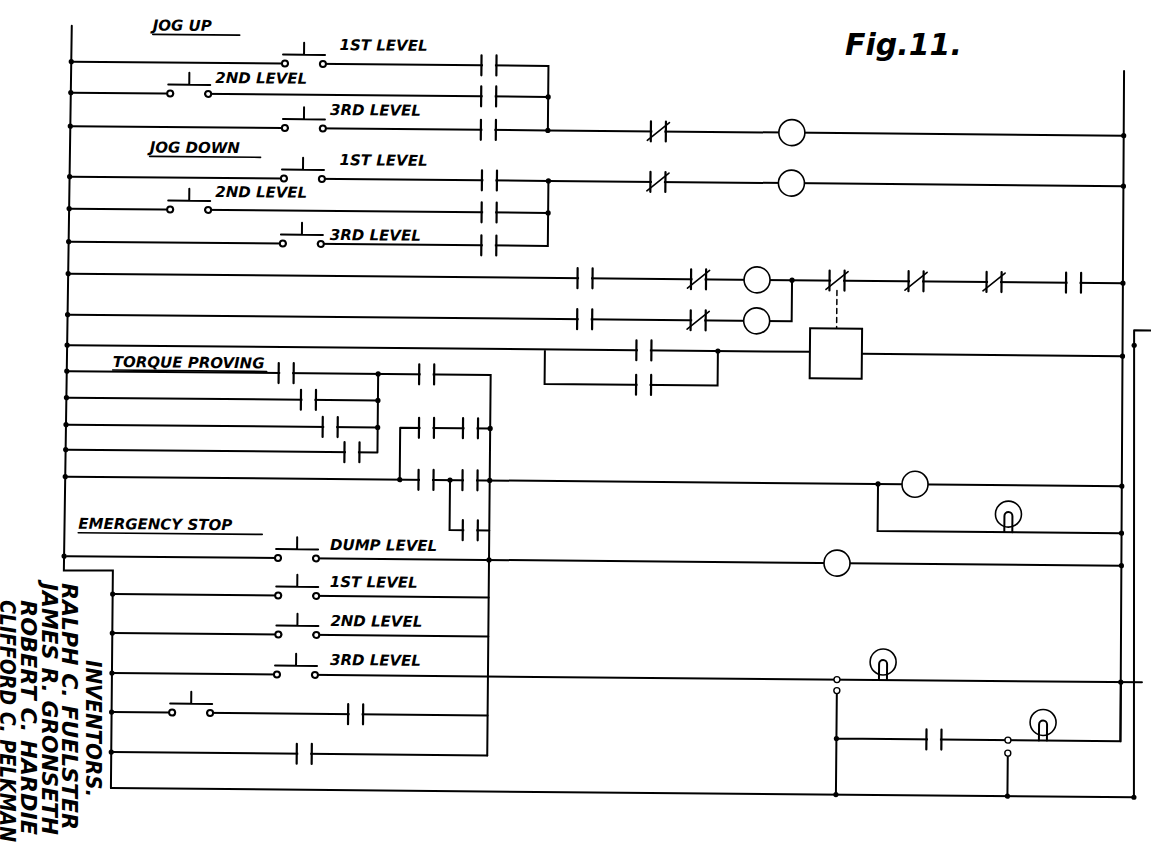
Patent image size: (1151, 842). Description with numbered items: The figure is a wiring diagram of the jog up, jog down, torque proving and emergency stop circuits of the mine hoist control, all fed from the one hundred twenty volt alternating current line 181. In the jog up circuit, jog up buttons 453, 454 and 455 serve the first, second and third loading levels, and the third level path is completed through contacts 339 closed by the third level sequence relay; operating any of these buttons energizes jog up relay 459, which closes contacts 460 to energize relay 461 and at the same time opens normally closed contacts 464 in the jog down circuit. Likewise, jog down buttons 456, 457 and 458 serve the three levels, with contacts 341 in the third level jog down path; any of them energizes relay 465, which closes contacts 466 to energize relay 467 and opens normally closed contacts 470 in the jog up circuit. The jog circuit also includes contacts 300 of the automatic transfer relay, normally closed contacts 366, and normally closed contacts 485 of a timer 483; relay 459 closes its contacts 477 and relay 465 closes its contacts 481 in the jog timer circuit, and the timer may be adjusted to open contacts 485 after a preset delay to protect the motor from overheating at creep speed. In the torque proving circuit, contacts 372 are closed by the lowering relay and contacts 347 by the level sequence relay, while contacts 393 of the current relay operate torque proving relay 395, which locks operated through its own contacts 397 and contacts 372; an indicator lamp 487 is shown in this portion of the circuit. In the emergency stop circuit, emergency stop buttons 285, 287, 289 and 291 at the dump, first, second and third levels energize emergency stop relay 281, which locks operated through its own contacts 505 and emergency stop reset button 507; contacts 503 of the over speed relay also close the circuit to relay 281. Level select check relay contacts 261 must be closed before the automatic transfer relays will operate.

The jog up button 453 is at (289, 50).
The jog up button 454 is at (179, 91).
The jog up button 455 is at (292, 116).
The jog down button 456 is at (313, 166).
The jog down button 457 is at (181, 207).
The jog down button 458 is at (290, 242).
The contacts 339 is at (492, 139).
The contacts 341 is at (493, 248).
The normally closed contacts 470 is at (666, 112).
The jog up relay 459 is at (787, 138).
The normally closed contacts 464 is at (654, 190).
The relay 465 is at (790, 192).
The contacts 460 is at (594, 266).
The relay 461 is at (765, 262).
The normally closed contacts 485 is at (850, 263).
The normally closed contacts 366 is at (991, 262).
The contacts 300 is at (1066, 262).
The contacts 466 is at (578, 319).
The relay 467 is at (761, 324).
The contacts 477 is at (634, 361).
The contacts 481 is at (652, 396).
The timer 483 is at (858, 374).
The contacts 372 is at (278, 380).
The contacts 397 is at (432, 386).
The contacts 393 is at (429, 464).
The contacts 347 is at (486, 533).
The torque proving relay 395 is at (929, 467).
The indicator lamp 487 is at (1026, 509).
The emergency stop button 285 is at (308, 536).
The emergency stop relay 281 is at (848, 567).
The emergency stop button 287 is at (280, 584).
The emergency stop button 289 is at (281, 624).
The emergency stop button 291 is at (281, 662).
The emergency stop reset button 507 is at (206, 720).
The relay contacts 505 is at (370, 722).
The contacts 503 is at (312, 762).
The level select check relay contacts 261 is at (943, 724).
The line 181 is at (69, 433).